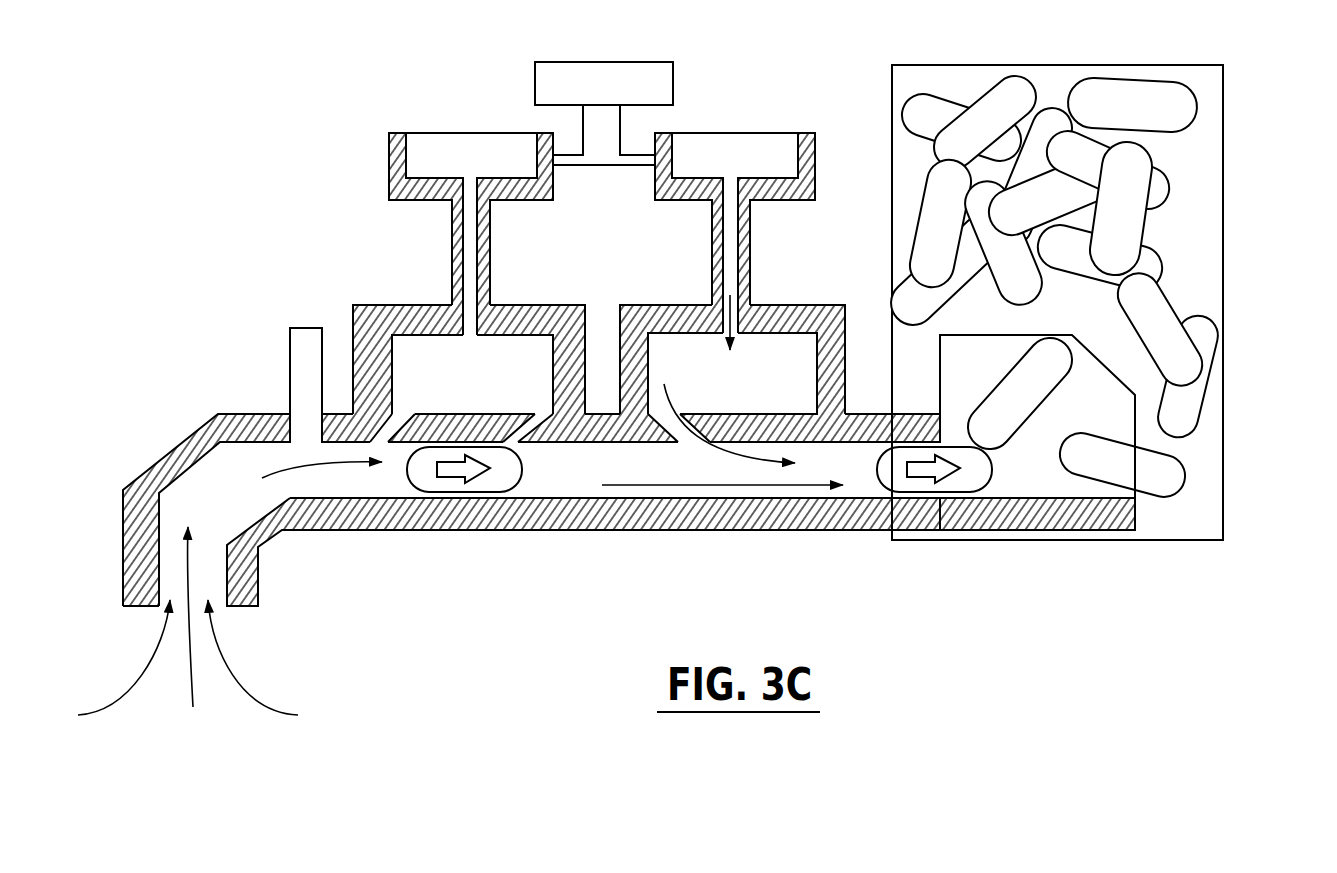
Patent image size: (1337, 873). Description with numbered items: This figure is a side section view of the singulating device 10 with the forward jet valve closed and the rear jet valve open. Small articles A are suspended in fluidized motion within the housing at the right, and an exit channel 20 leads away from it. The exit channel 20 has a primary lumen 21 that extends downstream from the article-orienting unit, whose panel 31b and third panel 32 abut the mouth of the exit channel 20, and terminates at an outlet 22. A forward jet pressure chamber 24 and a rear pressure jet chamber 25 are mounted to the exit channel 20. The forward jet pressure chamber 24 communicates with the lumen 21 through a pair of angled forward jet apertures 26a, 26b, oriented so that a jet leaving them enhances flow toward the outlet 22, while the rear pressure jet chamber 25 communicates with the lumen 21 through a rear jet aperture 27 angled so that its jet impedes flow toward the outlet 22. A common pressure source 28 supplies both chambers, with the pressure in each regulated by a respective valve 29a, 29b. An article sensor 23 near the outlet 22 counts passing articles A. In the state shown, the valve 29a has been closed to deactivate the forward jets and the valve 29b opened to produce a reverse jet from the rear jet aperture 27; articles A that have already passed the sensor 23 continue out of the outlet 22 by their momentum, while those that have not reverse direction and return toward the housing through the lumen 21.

The singulating device 10 is at (1236, 371).
The articles A is at (1148, 252).
The exit channel 20 is at (733, 552).
The primary lumen 21 is at (553, 483).
The outlet 22 is at (220, 610).
The article sensor 23 is at (310, 333).
The forward jet pressure chamber 24 is at (527, 347).
The rear pressure jet chamber 25 is at (770, 348).
The forward jet aperture 26a is at (532, 412).
The forward jet aperture 26b is at (405, 413).
The rear jet aperture 27 is at (672, 379).
The common pressure source 28 is at (623, 73).
The valve 29a is at (482, 145).
The valve 29b is at (730, 145).
The panel 31b is at (1110, 417).
The third panel 32 is at (1102, 518).